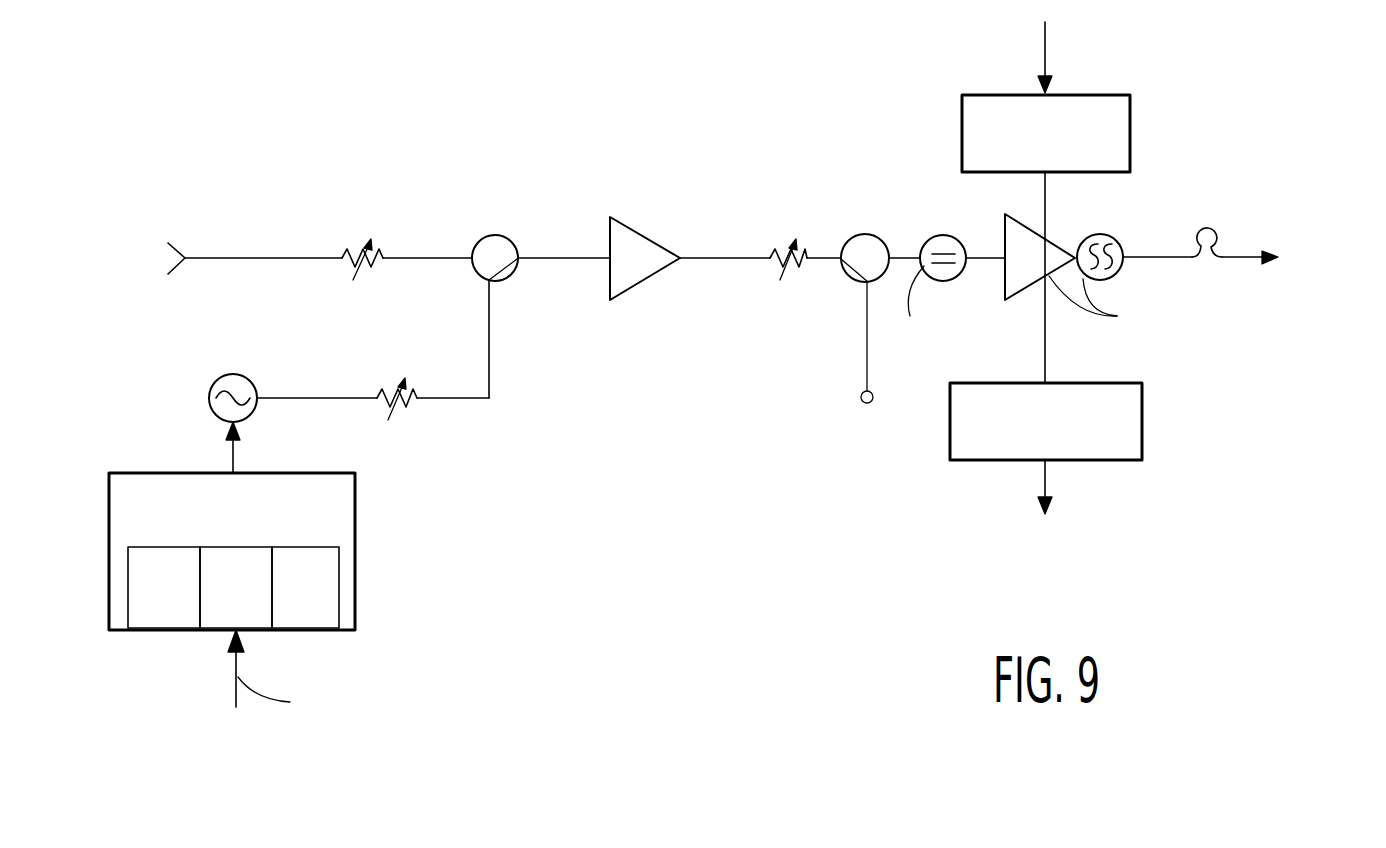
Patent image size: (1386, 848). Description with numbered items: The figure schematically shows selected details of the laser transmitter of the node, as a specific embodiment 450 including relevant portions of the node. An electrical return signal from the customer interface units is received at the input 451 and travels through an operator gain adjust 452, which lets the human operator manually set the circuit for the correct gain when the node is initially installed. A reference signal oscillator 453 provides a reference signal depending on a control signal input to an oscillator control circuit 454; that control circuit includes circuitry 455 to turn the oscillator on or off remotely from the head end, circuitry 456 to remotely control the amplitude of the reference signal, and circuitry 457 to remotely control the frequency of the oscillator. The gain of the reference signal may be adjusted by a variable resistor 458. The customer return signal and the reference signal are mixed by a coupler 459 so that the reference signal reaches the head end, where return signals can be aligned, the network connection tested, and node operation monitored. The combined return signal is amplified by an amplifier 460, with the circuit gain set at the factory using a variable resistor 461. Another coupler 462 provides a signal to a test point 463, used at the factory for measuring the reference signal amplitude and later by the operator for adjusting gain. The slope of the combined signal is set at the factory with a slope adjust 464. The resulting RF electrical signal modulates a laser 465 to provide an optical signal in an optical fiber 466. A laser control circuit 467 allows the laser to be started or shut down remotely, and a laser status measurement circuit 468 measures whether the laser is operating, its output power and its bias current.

The specific embodiment 450 is at (556, 697).
The electrical return signal input 451 is at (163, 252).
The operator gain adjust 452 is at (343, 259).
The reference signal oscillator 453 is at (215, 380).
The oscillator control circuit 454 is at (246, 603).
The on/off circuitry 455 is at (157, 623).
The amplitude control circuitry 456 is at (220, 620).
The frequency control circuitry 457 is at (303, 620).
The variable resistor 458 is at (415, 400).
The coupler 459 is at (490, 236).
The amplifier 460 is at (640, 228).
The variable resistor 461 is at (772, 247).
The coupler 462 is at (855, 236).
The test point 463 is at (859, 396).
The slope adjust 464 is at (935, 236).
The laser 465 is at (1114, 190).
The optical fiber 466 is at (1240, 262).
The laser control circuit 467 is at (1132, 127).
The laser status measurement circuit 468 is at (1145, 405).